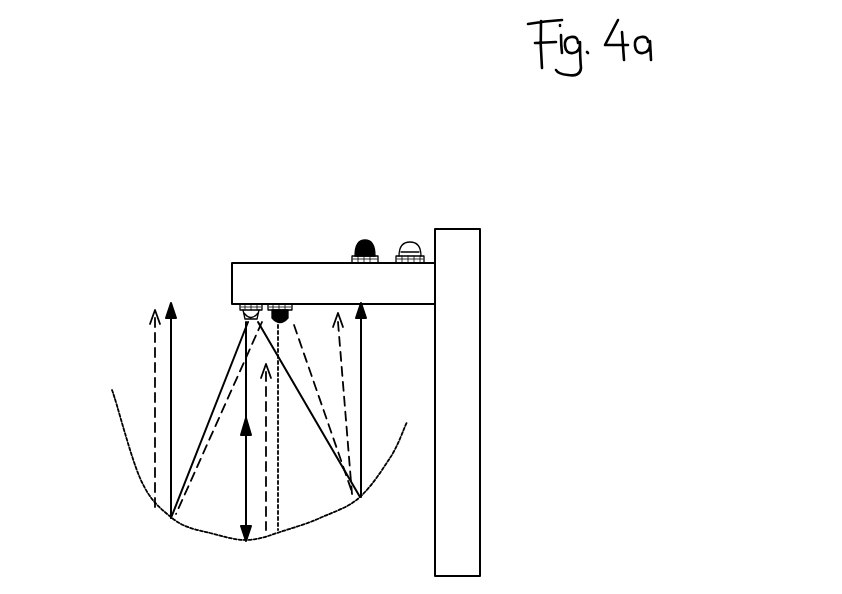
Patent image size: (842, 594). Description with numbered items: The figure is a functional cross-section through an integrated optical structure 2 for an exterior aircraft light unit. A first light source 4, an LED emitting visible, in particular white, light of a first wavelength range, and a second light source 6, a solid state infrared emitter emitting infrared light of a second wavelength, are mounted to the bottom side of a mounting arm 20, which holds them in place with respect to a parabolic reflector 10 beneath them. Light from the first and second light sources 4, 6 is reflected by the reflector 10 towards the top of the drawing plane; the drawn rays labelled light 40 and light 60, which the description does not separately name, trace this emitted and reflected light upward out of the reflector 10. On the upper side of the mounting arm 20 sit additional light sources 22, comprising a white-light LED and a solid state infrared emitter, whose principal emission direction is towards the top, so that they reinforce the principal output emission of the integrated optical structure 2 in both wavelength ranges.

The integrated optical structure 2 is at (112, 316).
The first light source 4 is at (246, 306).
The second light source 6 is at (283, 303).
The reflector 10 is at (143, 489).
The mounting arm 20 is at (423, 305).
The additional light sources 22 is at (412, 238).
The illumination light rays 40 is at (172, 356).
The reflected light rays 60 is at (160, 375).